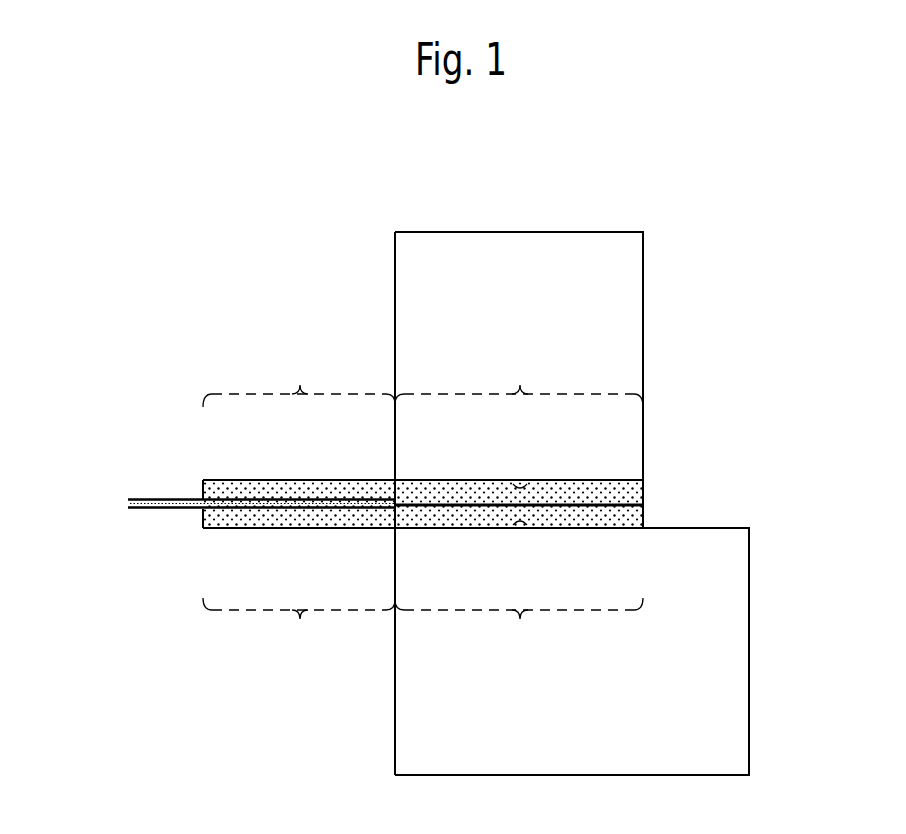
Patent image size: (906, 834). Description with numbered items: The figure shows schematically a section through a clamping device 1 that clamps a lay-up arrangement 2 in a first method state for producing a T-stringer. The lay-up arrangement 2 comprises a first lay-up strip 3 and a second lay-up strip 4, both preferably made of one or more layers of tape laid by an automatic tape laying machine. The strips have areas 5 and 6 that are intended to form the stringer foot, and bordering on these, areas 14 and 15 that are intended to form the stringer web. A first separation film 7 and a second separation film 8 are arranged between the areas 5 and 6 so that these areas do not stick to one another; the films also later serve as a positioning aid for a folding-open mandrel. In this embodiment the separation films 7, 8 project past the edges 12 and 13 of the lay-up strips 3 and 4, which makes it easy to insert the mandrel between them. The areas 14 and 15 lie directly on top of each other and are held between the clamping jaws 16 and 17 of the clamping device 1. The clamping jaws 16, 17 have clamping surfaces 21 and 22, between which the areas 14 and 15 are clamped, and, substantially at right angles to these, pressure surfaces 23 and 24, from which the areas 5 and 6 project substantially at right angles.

The clamping device 1 is at (582, 230).
The lay-up arrangement 2 is at (107, 459).
The first lay-up strip 3 is at (307, 490).
The second lay-up strip 4 is at (303, 517).
The area of first lay-up strip 5 is at (299, 379).
The area of second lay-up strip 6 is at (299, 627).
The first separation film 7 is at (137, 500).
The second separation film 8 is at (137, 508).
The edge of first lay-up strip 12 is at (203, 485).
The edge of second lay-up strip 13 is at (203, 525).
The area of first lay-up strip 14 is at (519, 379).
The area of second lay-up strip 15 is at (519, 627).
The clamping jaw 16 is at (623, 313).
The clamping jaw 17 is at (733, 650).
The clamping surface 21 is at (533, 487).
The clamping surface 22 is at (527, 522).
The pressure surface 23 is at (392, 344).
The pressure surface 24 is at (392, 648).